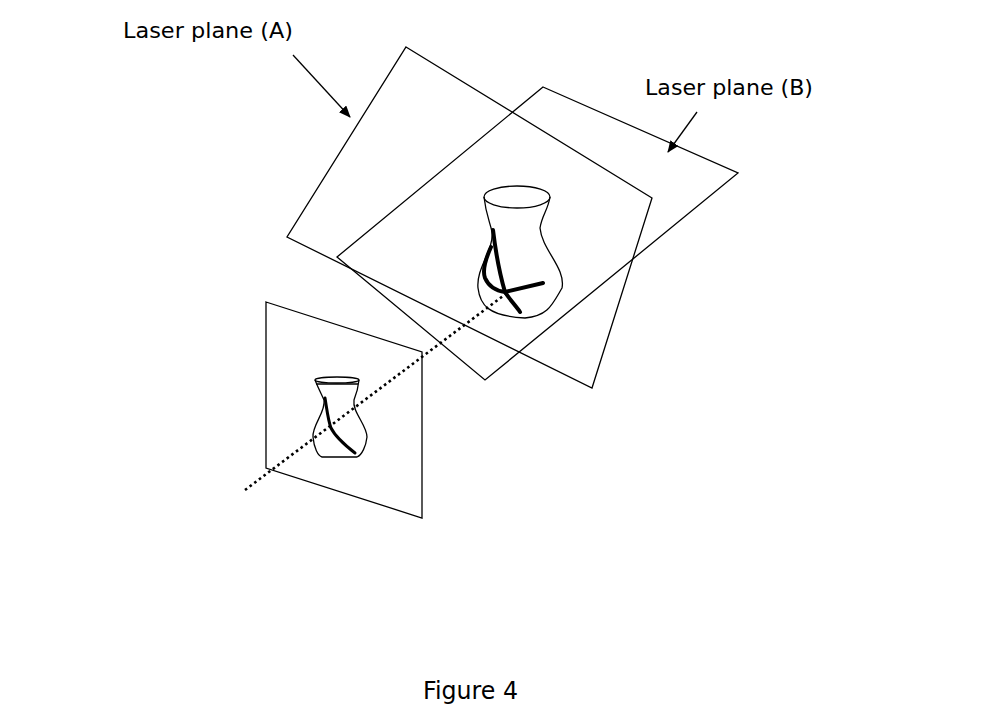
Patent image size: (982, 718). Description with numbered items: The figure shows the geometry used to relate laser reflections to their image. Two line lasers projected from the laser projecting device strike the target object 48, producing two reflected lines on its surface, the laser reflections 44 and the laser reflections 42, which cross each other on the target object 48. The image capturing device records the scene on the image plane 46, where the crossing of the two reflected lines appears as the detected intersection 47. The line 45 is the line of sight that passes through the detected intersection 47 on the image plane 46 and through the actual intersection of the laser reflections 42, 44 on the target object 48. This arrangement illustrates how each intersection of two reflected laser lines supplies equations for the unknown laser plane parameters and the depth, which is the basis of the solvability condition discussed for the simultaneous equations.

The laser reflections 42 is at (507, 262).
The laser reflections 44 is at (475, 277).
The line 45 is at (430, 358).
The image plane 46 is at (373, 512).
The detected intersection 47 is at (327, 425).
The target object 48 is at (528, 170).